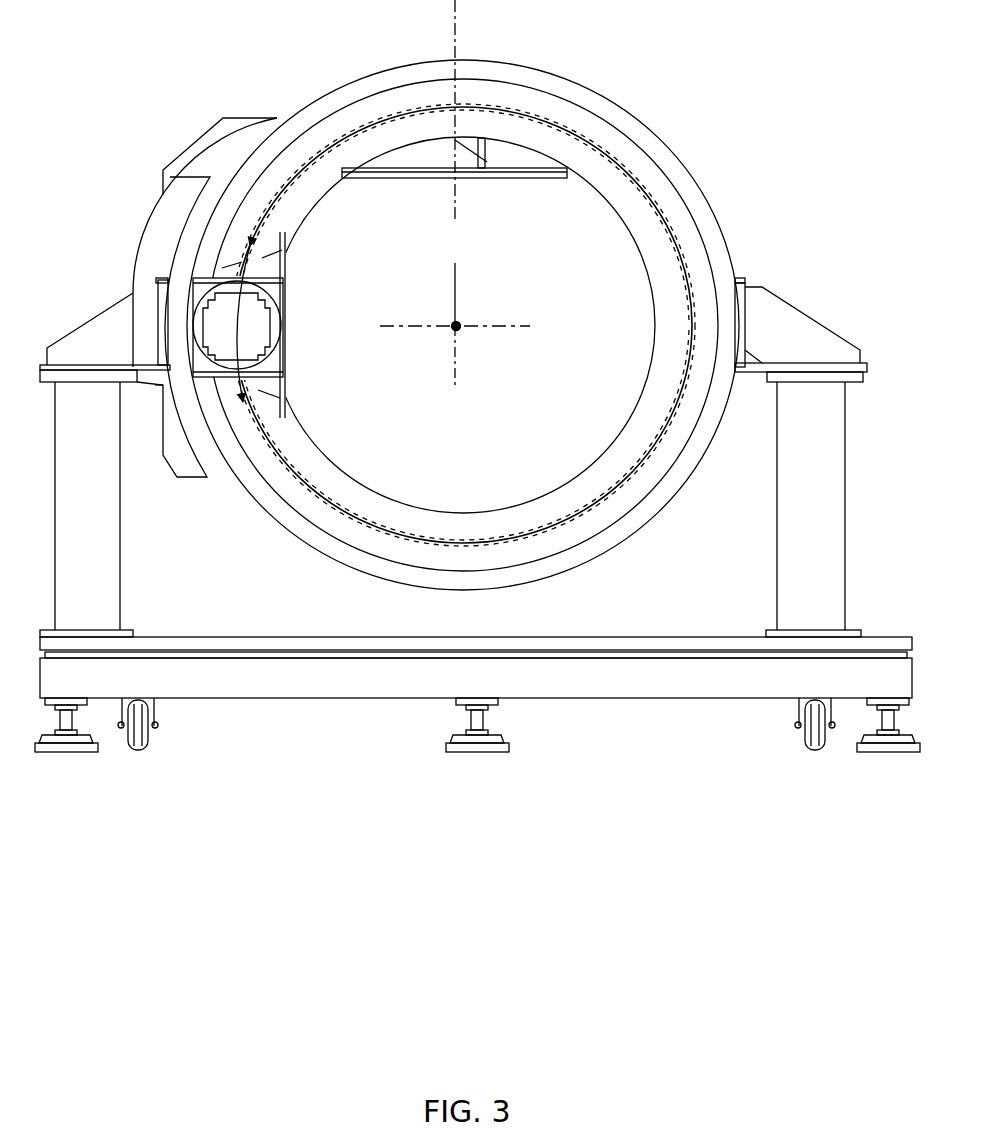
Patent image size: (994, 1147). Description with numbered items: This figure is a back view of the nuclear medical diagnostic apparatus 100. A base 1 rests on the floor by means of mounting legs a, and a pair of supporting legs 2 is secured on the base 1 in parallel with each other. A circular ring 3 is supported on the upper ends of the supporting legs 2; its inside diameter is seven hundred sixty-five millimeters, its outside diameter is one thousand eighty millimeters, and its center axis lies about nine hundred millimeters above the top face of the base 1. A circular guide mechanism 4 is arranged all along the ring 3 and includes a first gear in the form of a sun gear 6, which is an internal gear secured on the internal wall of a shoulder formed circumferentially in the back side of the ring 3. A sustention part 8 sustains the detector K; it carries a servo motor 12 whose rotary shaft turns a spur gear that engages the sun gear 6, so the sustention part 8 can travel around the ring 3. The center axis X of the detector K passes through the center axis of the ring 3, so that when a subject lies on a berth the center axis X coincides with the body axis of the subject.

The base 1 is at (202, 637).
The supporting legs 2 is at (55, 529).
The circular ring 3 is at (448, 60).
The circular guide mechanism 4 is at (380, 527).
The sun gear 6 is at (312, 494).
The sustention part 8 is at (178, 132).
The servo motor 12 is at (257, 326).
The nuclear medical diagnostic apparatus 100 is at (502, 866).
The mounting legs a is at (90, 752).
The detector K is at (407, 179).
The center axis of detector X is at (480, 152).